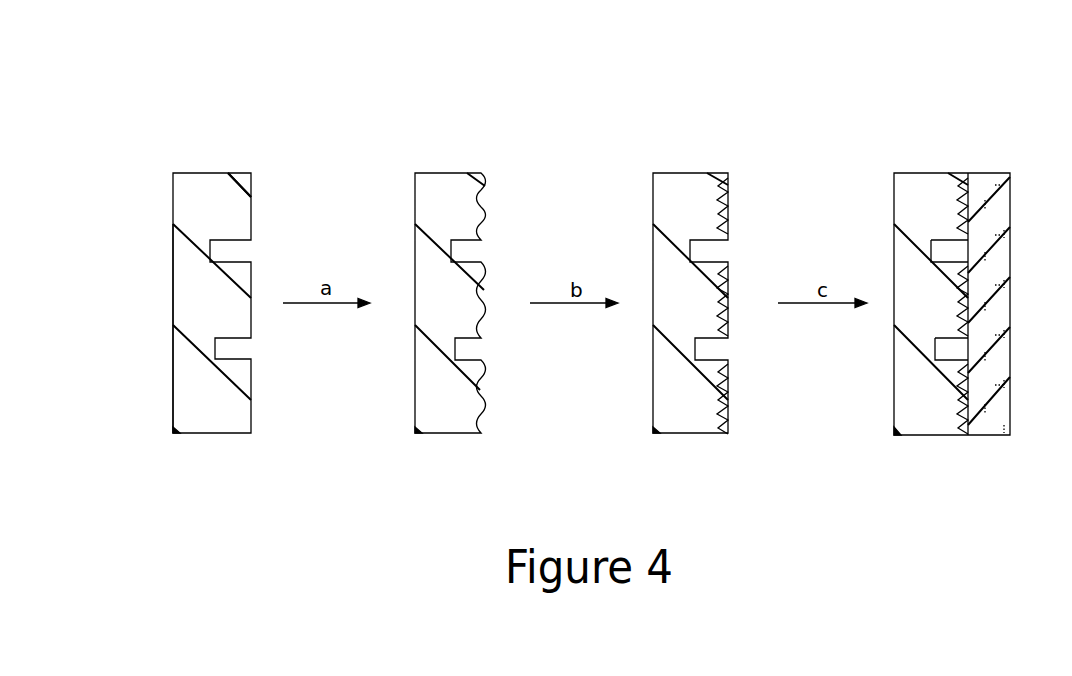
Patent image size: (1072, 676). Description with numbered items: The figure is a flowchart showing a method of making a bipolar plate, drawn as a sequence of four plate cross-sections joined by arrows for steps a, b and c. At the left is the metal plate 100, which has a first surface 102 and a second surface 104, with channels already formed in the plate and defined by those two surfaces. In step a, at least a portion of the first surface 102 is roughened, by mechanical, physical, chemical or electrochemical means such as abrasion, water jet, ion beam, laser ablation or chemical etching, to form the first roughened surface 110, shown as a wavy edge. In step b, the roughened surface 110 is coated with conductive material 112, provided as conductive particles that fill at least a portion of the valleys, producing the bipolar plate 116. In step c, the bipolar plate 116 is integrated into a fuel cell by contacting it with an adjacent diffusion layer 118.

The metal plate 100 is at (207, 173).
The first surface 102 is at (251, 197).
The second surface 104 is at (173, 285).
The first roughened surface 110 is at (490, 207).
The conductive material 112 is at (733, 227).
The bipolar plate 116 is at (726, 235).
The diffusion layer 118 is at (995, 187).